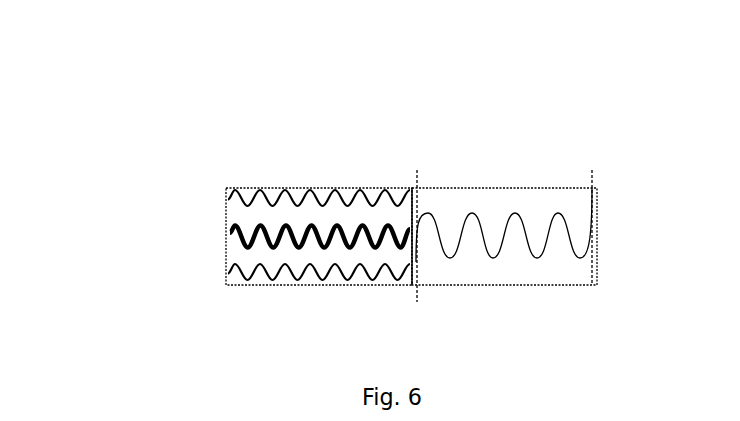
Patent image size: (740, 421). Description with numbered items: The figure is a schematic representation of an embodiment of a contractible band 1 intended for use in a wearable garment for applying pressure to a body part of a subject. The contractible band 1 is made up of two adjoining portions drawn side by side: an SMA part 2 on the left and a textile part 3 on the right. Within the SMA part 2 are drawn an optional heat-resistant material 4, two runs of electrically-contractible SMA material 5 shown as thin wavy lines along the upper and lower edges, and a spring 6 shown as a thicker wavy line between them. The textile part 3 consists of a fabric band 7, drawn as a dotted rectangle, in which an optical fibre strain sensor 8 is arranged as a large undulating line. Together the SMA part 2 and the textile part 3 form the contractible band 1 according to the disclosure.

The contractible band 1 is at (345, 170).
The SMA part 2 is at (264, 188).
The textile part 3 is at (539, 187).
The heat-resistant material 4 is at (319, 209).
The electrically-contractible SMA material 5 is at (270, 233).
The spring 6 is at (263, 245).
The fabric band 7 is at (508, 195).
The optical fibre strain sensor 8 is at (597, 278).